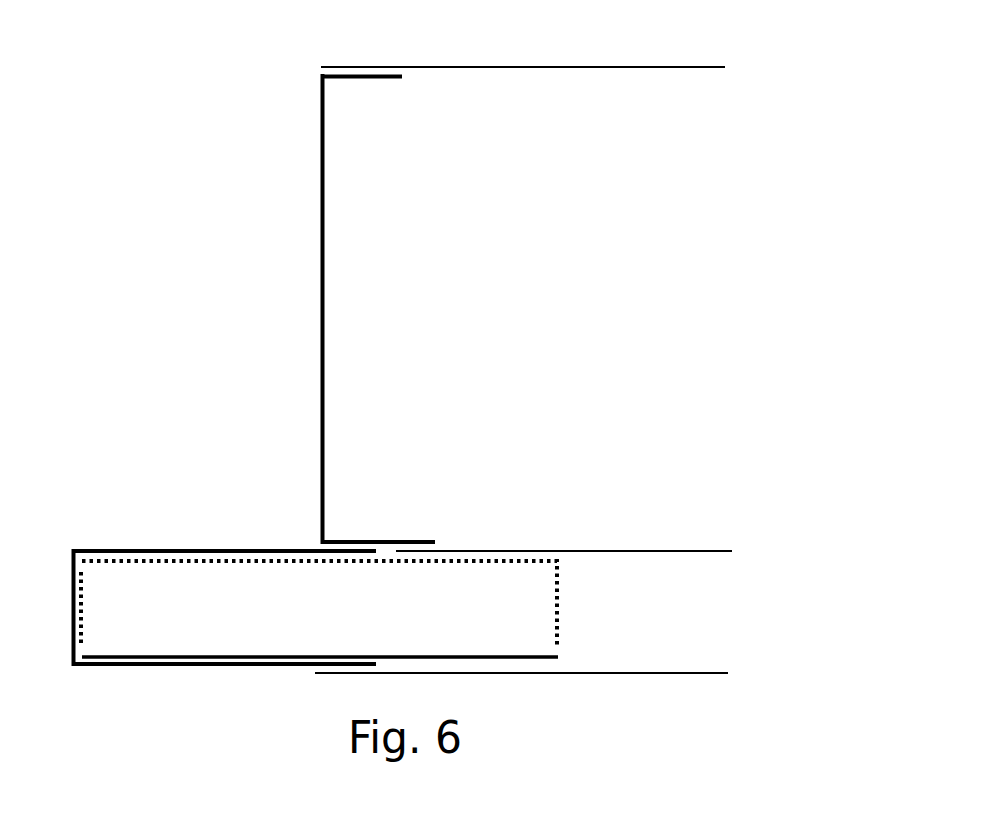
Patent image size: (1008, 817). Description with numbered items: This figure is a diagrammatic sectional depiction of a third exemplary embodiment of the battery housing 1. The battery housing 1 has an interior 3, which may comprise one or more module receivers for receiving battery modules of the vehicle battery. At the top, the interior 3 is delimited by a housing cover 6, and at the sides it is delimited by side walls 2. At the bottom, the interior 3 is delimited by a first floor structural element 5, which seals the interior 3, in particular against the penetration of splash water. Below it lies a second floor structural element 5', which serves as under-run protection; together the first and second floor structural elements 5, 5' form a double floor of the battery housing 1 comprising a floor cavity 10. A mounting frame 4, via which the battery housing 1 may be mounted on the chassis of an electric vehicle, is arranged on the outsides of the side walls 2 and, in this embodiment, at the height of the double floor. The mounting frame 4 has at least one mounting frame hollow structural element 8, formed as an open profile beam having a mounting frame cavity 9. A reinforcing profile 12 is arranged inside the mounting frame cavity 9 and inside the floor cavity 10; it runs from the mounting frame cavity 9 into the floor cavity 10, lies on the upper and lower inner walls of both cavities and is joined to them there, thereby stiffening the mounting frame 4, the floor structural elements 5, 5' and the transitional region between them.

The battery housing 1 is at (307, 298).
The side wall 2 is at (323, 176).
The interior 3 is at (445, 288).
The mounting frame 4 is at (351, 615).
The first floor structural element 5 is at (564, 504).
The second floor structural element 5' is at (521, 722).
The housing cover 6 is at (603, 67).
The mounting frame hollow structural element 8 is at (78, 548).
The mounting frame cavity 9 is at (209, 550).
The floor cavity 10 is at (620, 661).
The reinforcing profile 12 is at (110, 656).